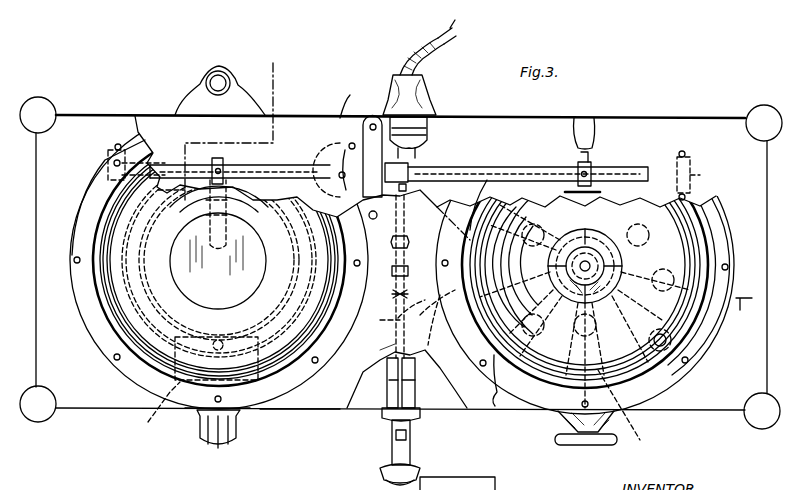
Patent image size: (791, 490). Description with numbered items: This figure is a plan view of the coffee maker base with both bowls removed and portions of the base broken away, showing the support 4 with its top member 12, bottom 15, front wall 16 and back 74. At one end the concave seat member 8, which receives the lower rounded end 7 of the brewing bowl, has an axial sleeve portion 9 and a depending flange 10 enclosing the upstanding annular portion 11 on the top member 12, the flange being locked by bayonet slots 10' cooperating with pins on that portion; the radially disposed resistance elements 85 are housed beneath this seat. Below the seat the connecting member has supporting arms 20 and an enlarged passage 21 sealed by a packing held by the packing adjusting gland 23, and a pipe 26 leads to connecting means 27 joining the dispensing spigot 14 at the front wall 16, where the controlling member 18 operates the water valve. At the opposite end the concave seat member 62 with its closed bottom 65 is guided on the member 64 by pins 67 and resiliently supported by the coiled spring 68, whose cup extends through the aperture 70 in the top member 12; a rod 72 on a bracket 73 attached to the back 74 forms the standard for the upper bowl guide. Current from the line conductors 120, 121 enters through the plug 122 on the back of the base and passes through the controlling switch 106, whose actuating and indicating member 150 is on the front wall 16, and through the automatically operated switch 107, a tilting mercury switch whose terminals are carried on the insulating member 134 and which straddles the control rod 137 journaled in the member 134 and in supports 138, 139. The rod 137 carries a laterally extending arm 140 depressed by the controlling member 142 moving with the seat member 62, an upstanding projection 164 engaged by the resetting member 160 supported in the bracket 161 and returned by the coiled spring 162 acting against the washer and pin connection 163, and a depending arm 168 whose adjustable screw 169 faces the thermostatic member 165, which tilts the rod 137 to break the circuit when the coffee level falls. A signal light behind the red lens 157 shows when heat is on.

The support 4 is at (321, 417).
The lower rounded end 7 is at (440, 213).
The concave seat member 8 is at (695, 235).
The axial sleeve portion 9 is at (549, 230).
The depending flange 10 is at (229, 129).
The bayonet slots 10' is at (167, 192).
The upstanding annular portion 11 is at (468, 215).
The top member 12 is at (290, 410).
The dispensing spigot 14 is at (415, 470).
The bottom 15 is at (540, 130).
The front wall 16 is at (458, 410).
The controlling member 18 is at (605, 447).
The supporting arms 20 is at (640, 195).
The enlarged passage 21 is at (562, 288).
The packing adjusting gland 23 is at (592, 235).
The pipe 26 is at (439, 330).
The connecting means 27 is at (386, 412).
The concave seat member 62 is at (115, 216).
The member 64 is at (187, 163).
The closed bottom 65 is at (242, 297).
The pins 67 is at (123, 352).
The coiled spring 68 is at (250, 208).
The aperture 70 is at (330, 270).
The rod 72 is at (205, 80).
The bracket 73 is at (242, 100).
The back 74 is at (330, 117).
The resistance elements 85 is at (625, 409).
The controlling switch 106 is at (147, 411).
The automatically operated switch 107 is at (330, 160).
The line conductor 120 is at (448, 40).
The line conductor 121 is at (452, 26).
The plug 122 is at (425, 135).
The insulating member 134 is at (362, 136).
The control rod 137 is at (515, 167).
The support 138 is at (108, 180).
The support 139 is at (688, 162).
The laterally extending arm 140 is at (218, 261).
The controlling member 142 is at (206, 222).
The actuating and indicating member 150 is at (205, 437).
The red lens 157 is at (565, 430).
The resetting member 160 is at (414, 276).
The bracket 161 is at (413, 270).
The coiled spring 162 is at (391, 242).
The washer and pin connection 163 is at (390, 313).
The upstanding projection 164 is at (408, 170).
The thermostatic member 165 is at (563, 192).
The depending arm 168 is at (588, 152).
The adjustable screw 169 is at (580, 125).